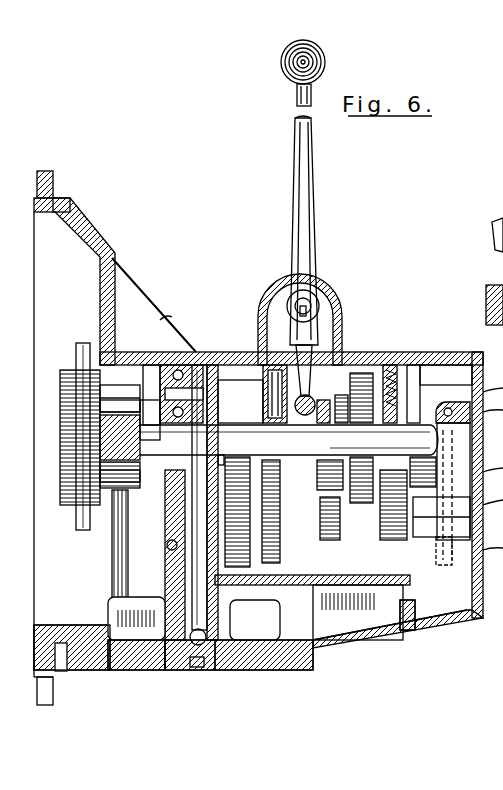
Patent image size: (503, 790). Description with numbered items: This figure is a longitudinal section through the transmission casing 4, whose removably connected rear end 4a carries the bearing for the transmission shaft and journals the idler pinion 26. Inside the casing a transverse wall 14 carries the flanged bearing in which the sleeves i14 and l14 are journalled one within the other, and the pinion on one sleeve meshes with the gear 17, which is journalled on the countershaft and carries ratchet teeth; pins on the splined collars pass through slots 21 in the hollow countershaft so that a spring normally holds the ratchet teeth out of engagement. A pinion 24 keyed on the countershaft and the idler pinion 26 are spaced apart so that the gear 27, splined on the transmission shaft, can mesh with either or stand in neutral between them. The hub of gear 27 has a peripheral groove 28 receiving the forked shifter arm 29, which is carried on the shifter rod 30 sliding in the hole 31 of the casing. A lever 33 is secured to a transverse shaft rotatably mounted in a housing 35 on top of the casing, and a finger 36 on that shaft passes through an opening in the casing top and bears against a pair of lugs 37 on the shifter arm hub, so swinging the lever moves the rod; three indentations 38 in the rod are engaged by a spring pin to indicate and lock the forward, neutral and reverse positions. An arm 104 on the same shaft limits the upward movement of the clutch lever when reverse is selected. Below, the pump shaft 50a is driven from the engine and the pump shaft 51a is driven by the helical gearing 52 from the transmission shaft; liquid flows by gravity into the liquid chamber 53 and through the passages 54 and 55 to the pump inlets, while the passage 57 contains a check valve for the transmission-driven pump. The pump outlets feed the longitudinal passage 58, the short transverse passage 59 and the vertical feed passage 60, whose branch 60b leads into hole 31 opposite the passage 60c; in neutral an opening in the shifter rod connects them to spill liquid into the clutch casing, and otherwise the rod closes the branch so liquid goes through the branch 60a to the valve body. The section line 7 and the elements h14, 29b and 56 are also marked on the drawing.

The transmission casing 4 is at (375, 352).
The rear end of the casing 4a is at (437, 352).
The section line / control knob 7 is at (303, 40).
The transverse wall 14 is at (165, 571).
The gear collar i14 is at (100, 412).
The gear collar l14 is at (100, 480).
The bracket h14 is at (176, 352).
The gear 17 is at (130, 350).
The slots 21 is at (167, 547).
The pinion 24 is at (380, 612).
The idler pinion 26 is at (408, 605).
The gear 27 is at (375, 352).
The peripheral groove 28 is at (380, 516).
The shifter arm 29 is at (345, 352).
The main shaft 29b is at (289, 440).
The shifter rod 30 is at (255, 352).
The hole 31 is at (195, 352).
The lever 33 is at (312, 186).
The housing 35 is at (268, 355).
The finger 36 is at (330, 350).
The lugs 37 is at (258, 350).
The indentations 38 is at (320, 447).
The pump shaft 50a is at (115, 540).
The pump shaft 51a is at (338, 480).
The helical gearing 52 is at (288, 482).
The liquid chamber 53 is at (343, 630).
The passage 54 is at (100, 670).
The passage 55 is at (285, 660).
The floor portion 56 is at (143, 672).
The passage 57 is at (220, 672).
The passage 58 is at (245, 610).
The short transverse passage 59 is at (182, 672).
The vertical passage 60 is at (165, 605).
The branch of the feed passage 60a is at (247, 414).
The branch 60b is at (235, 447).
The passage 60c is at (213, 352).
The arm 104 is at (496, 285).